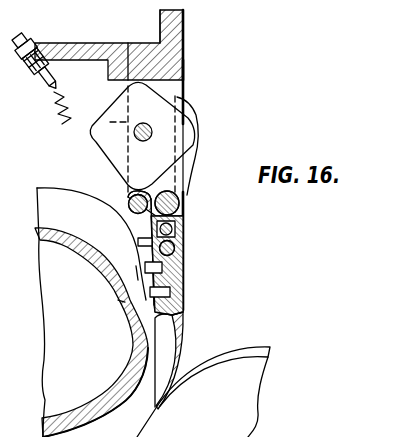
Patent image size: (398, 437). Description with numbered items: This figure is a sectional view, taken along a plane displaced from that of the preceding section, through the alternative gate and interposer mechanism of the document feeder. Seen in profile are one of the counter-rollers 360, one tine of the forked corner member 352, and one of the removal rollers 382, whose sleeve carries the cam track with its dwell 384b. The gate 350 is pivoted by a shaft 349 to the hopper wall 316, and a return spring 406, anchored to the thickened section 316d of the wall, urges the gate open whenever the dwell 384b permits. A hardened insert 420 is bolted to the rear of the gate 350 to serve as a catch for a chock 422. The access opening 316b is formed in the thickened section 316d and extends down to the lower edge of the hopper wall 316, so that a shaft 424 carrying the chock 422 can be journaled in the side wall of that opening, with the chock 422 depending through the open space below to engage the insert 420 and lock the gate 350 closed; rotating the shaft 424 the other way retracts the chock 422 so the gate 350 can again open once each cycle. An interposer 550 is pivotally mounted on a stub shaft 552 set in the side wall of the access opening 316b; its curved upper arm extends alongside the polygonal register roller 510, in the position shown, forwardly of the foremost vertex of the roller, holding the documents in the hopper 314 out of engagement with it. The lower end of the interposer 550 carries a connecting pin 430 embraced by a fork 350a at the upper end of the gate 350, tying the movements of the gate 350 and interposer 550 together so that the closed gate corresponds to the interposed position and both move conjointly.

The hopper 314 is at (199, 58).
The hopper wall 316 is at (163, 29).
The access opening 316b is at (179, 88).
The thickened section 316d is at (185, 66).
The shaft 349 is at (183, 251).
The gate 350 is at (183, 301).
The fork 350a is at (150, 241).
The forked corner member 352 is at (229, 350).
The counter-rollers 360 is at (248, 398).
The removal rollers 382 is at (45, 186).
The dwell 384b is at (51, 226).
The return spring 406 is at (62, 112).
The hardened insert 420 is at (103, 312).
The chock 422 is at (136, 266).
The shaft 424 is at (128, 193).
The connecting pin 430 is at (183, 225).
The polygonal register roller 510 is at (92, 132).
The interposer 550 is at (187, 168).
The stub shaft 552 is at (181, 197).